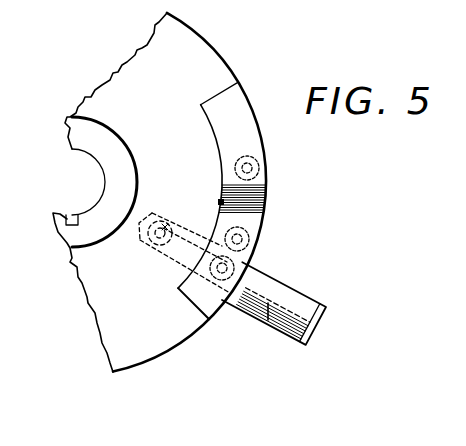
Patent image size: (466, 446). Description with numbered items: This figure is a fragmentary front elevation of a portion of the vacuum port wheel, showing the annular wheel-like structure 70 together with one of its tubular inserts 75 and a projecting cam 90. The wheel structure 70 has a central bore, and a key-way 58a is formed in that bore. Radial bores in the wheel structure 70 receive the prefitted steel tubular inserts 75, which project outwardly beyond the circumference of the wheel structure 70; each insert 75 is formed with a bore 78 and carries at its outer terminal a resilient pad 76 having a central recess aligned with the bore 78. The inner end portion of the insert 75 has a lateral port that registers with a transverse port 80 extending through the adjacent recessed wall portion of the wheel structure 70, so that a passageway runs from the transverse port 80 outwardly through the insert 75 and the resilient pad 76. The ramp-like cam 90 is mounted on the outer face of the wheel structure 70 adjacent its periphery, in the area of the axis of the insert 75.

The key-way 58a is at (70, 215).
The wheel structure 70 is at (163, 333).
The tubular insert 75 is at (268, 276).
The resilient pad 76 is at (334, 316).
The bore 78 is at (270, 328).
The transverse port 80 is at (174, 215).
The ramp-like cam 90 is at (258, 192).